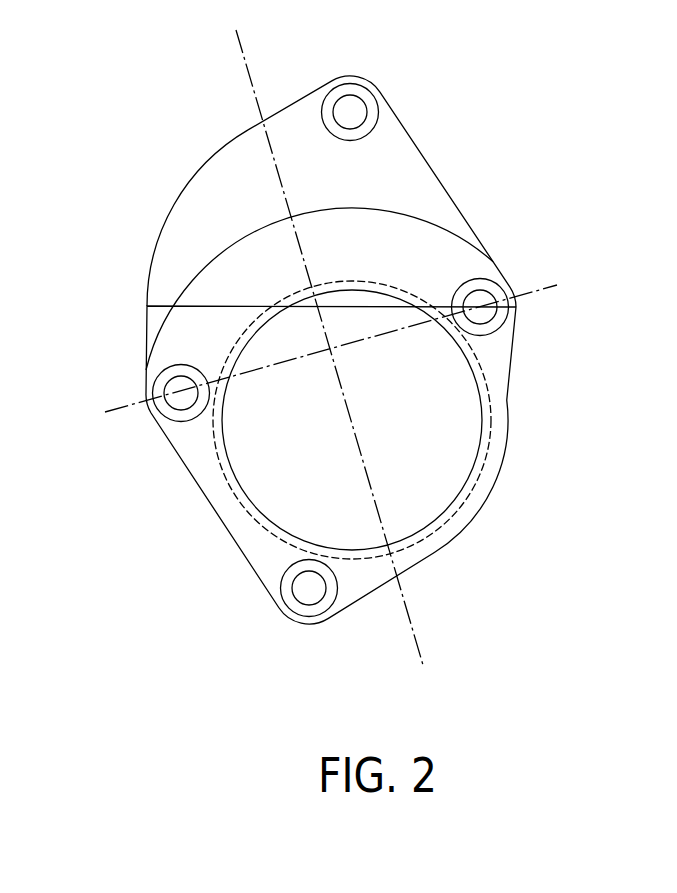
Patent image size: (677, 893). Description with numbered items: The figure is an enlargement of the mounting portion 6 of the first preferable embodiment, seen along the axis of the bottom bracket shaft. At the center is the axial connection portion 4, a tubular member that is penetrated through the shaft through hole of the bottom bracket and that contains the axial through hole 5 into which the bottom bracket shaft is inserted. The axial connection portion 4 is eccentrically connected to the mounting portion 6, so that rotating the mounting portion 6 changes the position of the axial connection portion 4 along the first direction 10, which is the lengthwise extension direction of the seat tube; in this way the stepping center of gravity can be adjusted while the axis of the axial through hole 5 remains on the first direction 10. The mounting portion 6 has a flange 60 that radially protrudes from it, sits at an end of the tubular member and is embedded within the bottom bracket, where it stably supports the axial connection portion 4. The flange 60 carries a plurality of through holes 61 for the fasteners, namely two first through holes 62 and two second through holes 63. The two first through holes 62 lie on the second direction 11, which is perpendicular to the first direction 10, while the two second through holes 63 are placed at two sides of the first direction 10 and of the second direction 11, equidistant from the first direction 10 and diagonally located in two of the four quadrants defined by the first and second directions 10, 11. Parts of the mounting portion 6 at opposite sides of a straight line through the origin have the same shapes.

The axial connection portion 4 is at (500, 412).
The axial through hole 5 is at (442, 458).
The mounting portion 6 is at (158, 122).
The first direction 10 is at (248, 67).
The second direction 11 is at (540, 278).
The flange 60 is at (413, 174).
The through holes 61 is at (270, 364).
The first through holes 62 is at (183, 403).
The second through holes 63 is at (303, 590).